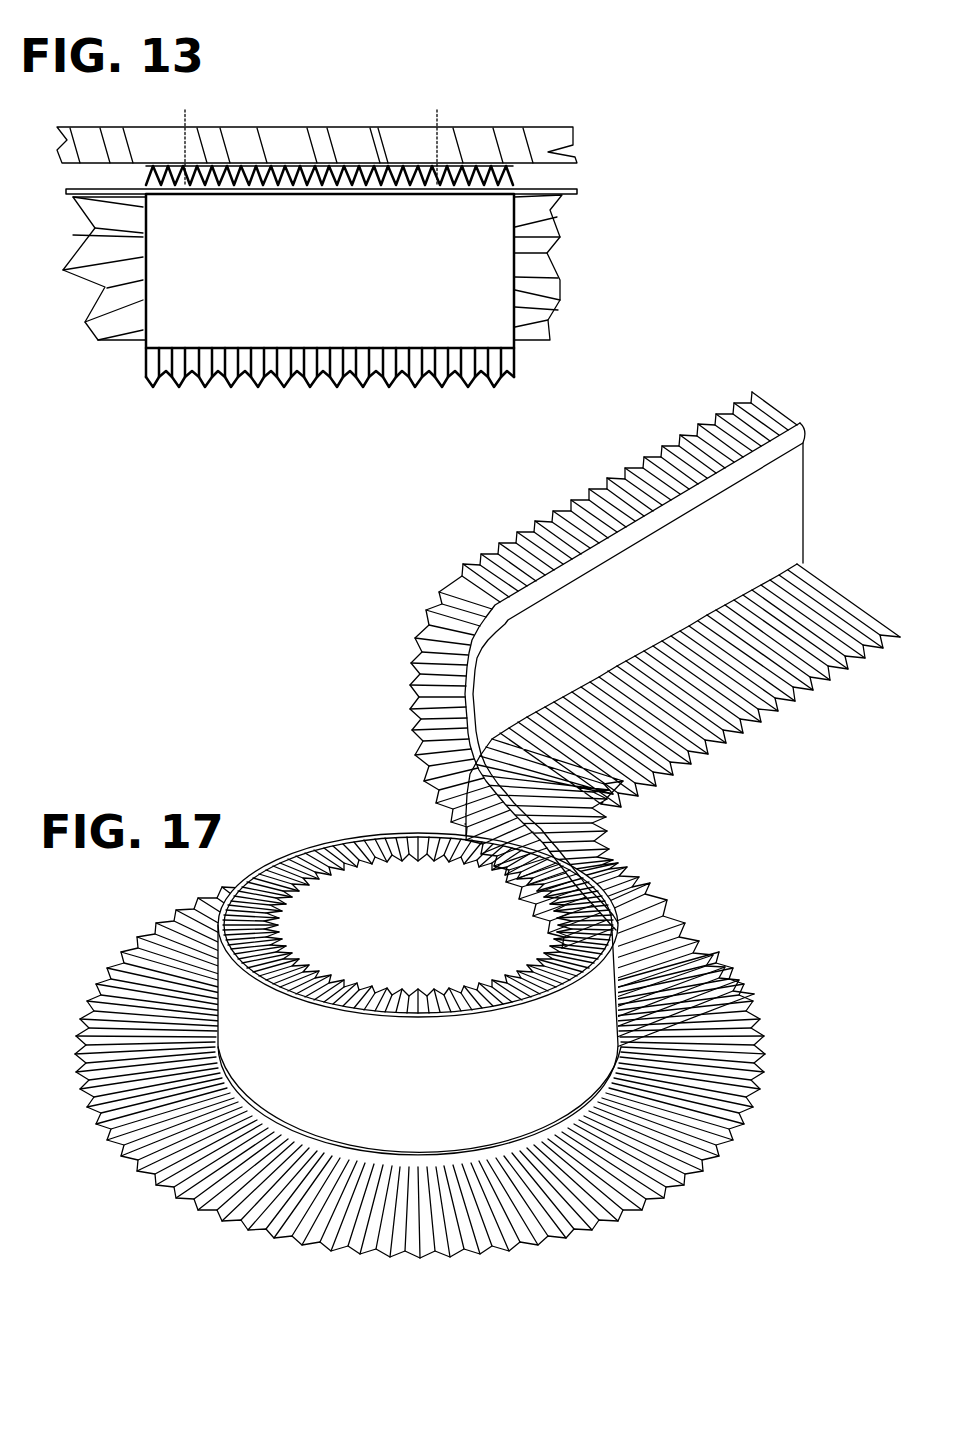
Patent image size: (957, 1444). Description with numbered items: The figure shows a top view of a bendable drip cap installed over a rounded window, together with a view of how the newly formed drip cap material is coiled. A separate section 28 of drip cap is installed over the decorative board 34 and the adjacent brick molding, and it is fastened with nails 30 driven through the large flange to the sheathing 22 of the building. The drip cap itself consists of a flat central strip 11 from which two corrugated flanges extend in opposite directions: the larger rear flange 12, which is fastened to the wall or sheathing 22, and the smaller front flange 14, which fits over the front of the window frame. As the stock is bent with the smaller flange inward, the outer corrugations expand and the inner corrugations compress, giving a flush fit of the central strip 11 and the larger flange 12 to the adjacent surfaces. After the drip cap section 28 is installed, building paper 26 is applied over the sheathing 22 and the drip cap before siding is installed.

In FIG. 13, the central strip 11 is at (482, 306).
In FIG. 17, the central strip 11 is at (610, 1020).
In FIG. 13, the rear flange 12 is at (513, 177).
In FIG. 17, the rear flange 12 is at (707, 1127).
In FIG. 13, the front flange 14 is at (385, 383).
In FIG. 17, the front flange 14 is at (352, 852).
In FIG. 13, the sheathing 22 is at (313, 128).
In FIG. 13, the building paper 26 is at (580, 191).
In FIG. 13, the drip cap section 28 is at (138, 359).
In FIG. 13, the nail 30 is at (185, 118).
In FIG. 13, the decorative board 34 is at (560, 280).